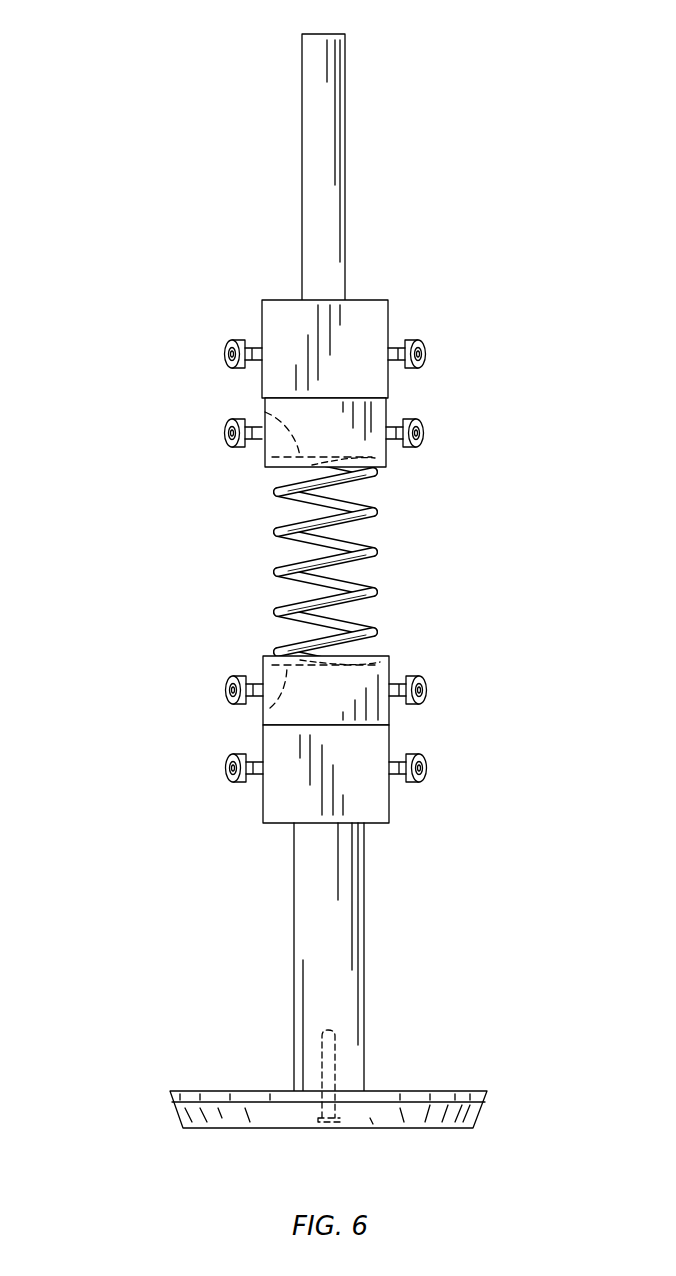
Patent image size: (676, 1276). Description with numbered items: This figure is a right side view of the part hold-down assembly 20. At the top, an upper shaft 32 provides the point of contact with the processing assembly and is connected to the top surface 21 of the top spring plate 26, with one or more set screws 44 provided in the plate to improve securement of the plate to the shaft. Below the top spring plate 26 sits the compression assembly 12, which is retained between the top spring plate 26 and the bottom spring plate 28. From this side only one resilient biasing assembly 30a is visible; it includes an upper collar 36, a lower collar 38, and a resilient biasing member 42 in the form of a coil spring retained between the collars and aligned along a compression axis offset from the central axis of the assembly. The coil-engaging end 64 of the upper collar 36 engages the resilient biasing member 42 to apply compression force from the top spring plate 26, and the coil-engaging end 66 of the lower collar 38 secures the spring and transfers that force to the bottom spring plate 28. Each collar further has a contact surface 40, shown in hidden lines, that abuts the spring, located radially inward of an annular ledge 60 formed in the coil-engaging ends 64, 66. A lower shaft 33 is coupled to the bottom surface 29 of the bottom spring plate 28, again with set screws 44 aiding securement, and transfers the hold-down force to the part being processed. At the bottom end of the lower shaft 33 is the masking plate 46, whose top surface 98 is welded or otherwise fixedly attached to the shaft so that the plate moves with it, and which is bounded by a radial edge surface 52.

The part hold-down assembly 20 is at (150, 119).
The upper shaft 32 is at (345, 203).
The top surface 21 is at (366, 366).
The top spring plate 26 is at (380, 330).
The upper collar 36 is at (360, 413).
The contact surface 40 is at (265, 412).
The annular ledge 60 is at (265, 470).
The coil-engaging end 64 is at (385, 470).
The resilient biasing assembly 30a is at (320, 562).
The resilient biasing member 42 is at (390, 584).
The compression assembly 12 is at (320, 562).
The coil-engaging end 66 is at (383, 657).
The lower collar 38 is at (278, 708).
The bottom spring plate 28 is at (275, 823).
The bottom surface 29 is at (377, 823).
The set screws 44 is at (412, 782).
The lower shaft 33 is at (348, 995).
The top surface 98 is at (230, 1090).
The masking plate 46 is at (440, 1090).
The radial edge surface 52 is at (488, 1097).